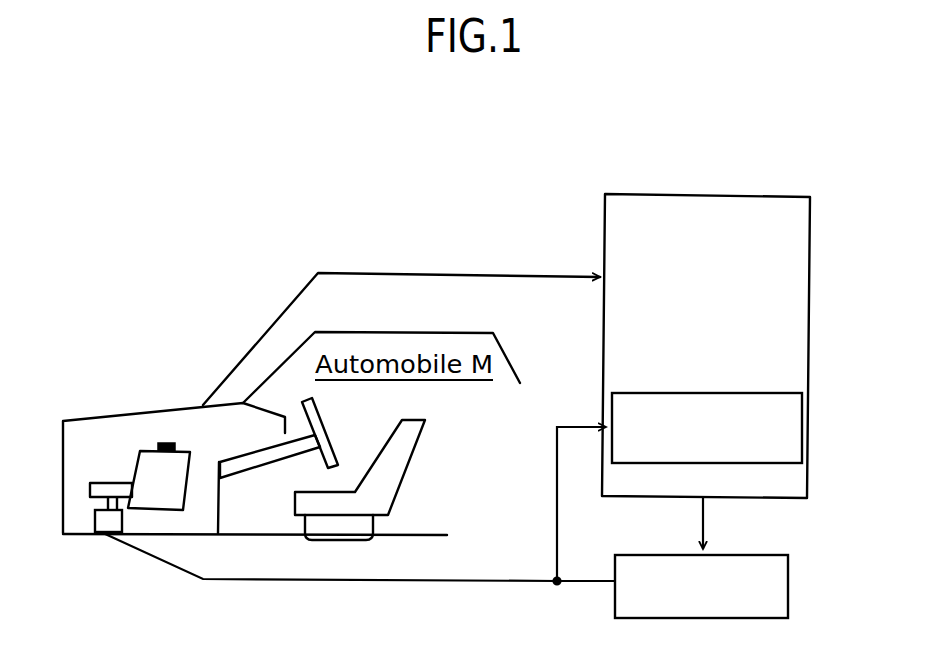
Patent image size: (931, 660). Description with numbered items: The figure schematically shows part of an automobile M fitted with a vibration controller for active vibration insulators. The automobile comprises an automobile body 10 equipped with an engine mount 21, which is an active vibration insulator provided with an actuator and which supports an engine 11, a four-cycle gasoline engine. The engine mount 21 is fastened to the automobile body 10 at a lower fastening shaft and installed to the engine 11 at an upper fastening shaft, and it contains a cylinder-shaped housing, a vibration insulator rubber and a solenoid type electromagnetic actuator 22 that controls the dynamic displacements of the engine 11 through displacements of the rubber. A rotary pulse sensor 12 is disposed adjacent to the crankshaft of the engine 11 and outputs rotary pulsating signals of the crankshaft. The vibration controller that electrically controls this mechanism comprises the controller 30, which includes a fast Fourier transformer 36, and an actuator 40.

The automobile body 10 is at (90, 420).
The engine 11 is at (135, 468).
The rotary pulse sensor 12 is at (163, 442).
The engine mount 21 is at (92, 518).
The solenoid type electromagnetic actuator 22 is at (102, 528).
The controller 30 is at (780, 190).
The fast Fourier transformer 36 is at (802, 432).
The actuator 40 is at (740, 555).